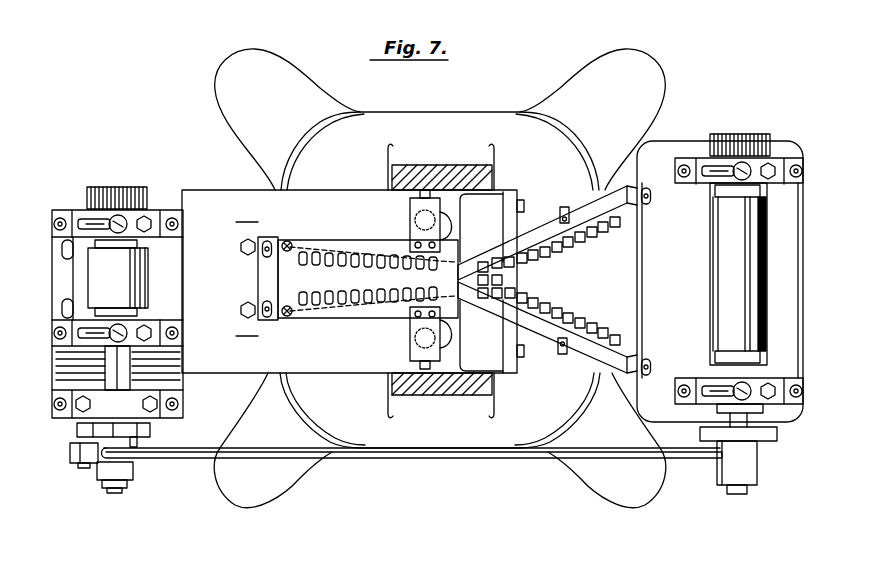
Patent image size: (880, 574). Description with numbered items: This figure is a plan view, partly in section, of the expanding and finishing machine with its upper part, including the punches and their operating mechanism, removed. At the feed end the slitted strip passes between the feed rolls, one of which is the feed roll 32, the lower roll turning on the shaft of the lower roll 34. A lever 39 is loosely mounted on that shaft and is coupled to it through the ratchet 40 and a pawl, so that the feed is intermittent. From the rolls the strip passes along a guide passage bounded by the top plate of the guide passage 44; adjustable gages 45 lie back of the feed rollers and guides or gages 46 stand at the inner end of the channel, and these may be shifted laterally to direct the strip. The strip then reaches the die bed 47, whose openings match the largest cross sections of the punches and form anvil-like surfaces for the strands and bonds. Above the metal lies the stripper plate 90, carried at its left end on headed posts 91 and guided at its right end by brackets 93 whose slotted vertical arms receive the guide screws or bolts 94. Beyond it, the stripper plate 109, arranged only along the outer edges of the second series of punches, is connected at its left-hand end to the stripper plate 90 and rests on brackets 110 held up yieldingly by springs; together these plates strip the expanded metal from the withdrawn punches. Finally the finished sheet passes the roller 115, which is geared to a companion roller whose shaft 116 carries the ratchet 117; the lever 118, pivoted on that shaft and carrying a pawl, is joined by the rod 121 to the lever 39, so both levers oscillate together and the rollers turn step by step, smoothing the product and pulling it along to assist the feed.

The feed roll 32 is at (100, 262).
The shaft of the lower roll 34 is at (115, 370).
The lever 39 is at (83, 434).
The ratchet 40 is at (152, 436).
The top plate of the guide passage 44 is at (197, 257).
The adjustable gages 45 is at (62, 246).
The guides or gages 46 is at (262, 240).
The die bed 47 is at (277, 233).
The stripper plate 90 is at (380, 312).
The headed posts 91 is at (290, 243).
The brackets 93 is at (410, 210).
The guide screws or bolts 94 is at (431, 200).
The stripper plate 109 is at (583, 213).
The brackets 110 is at (562, 207).
The roller 115 is at (743, 243).
The shaft 116 is at (750, 418).
The ratchet 117 is at (760, 437).
The lever 118 is at (724, 442).
The rod 121 is at (206, 456).